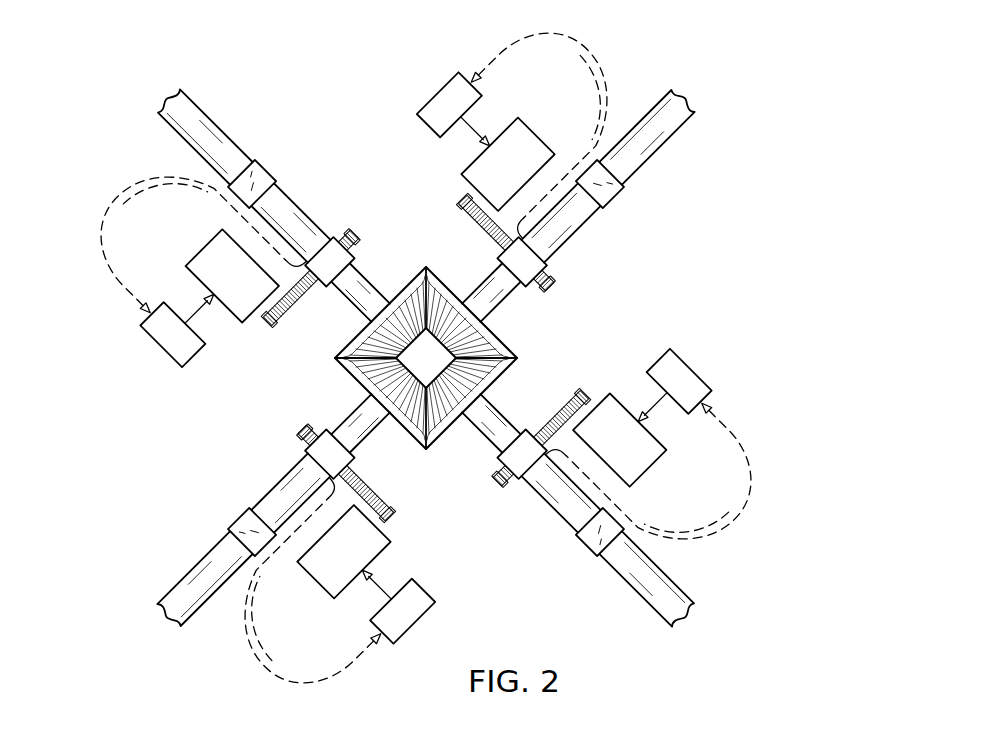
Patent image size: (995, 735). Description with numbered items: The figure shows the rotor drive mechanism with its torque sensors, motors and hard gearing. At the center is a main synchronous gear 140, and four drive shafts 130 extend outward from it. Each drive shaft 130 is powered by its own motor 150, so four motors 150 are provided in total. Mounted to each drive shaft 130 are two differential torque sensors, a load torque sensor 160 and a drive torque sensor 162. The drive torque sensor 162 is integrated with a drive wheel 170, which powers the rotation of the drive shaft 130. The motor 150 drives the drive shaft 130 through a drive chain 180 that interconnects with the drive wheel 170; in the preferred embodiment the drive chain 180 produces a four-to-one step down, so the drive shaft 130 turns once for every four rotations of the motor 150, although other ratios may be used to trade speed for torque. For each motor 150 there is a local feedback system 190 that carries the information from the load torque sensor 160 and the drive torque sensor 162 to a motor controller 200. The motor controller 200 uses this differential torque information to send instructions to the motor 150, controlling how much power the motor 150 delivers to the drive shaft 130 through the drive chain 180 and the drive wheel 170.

The drive shaft 130 is at (660, 147).
The main synchronous gear 140 is at (334, 359).
The motor 150 is at (187, 260).
The load torque sensor 160 is at (612, 202).
The drive torque sensor 162 is at (546, 272).
The drive wheel 170 is at (337, 238).
The drive chain 180 is at (466, 223).
The local feedback system 190 is at (593, 64).
The motor controller 200 is at (445, 77).